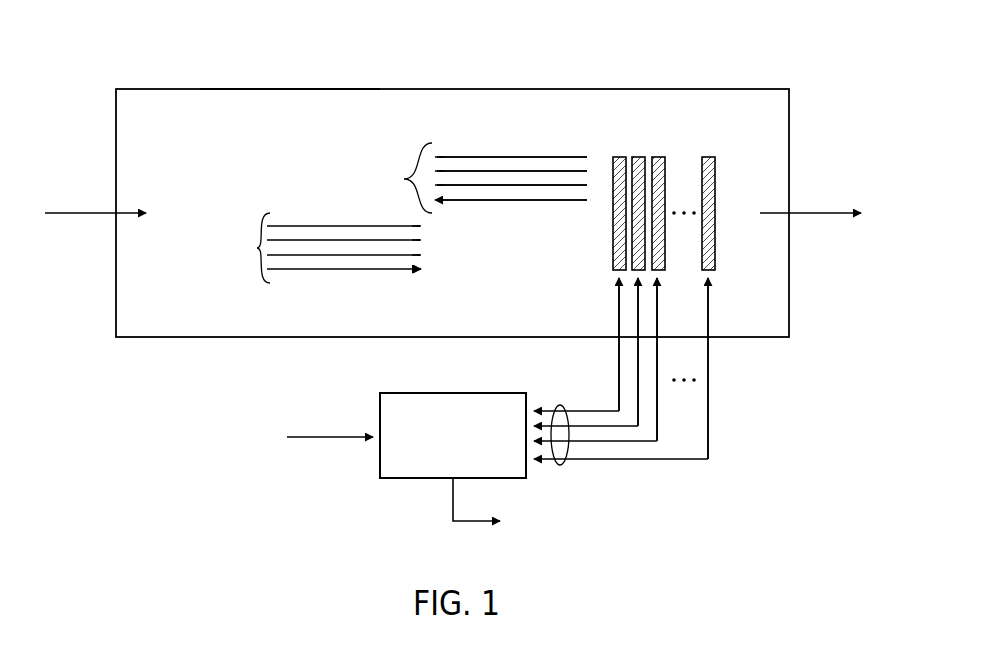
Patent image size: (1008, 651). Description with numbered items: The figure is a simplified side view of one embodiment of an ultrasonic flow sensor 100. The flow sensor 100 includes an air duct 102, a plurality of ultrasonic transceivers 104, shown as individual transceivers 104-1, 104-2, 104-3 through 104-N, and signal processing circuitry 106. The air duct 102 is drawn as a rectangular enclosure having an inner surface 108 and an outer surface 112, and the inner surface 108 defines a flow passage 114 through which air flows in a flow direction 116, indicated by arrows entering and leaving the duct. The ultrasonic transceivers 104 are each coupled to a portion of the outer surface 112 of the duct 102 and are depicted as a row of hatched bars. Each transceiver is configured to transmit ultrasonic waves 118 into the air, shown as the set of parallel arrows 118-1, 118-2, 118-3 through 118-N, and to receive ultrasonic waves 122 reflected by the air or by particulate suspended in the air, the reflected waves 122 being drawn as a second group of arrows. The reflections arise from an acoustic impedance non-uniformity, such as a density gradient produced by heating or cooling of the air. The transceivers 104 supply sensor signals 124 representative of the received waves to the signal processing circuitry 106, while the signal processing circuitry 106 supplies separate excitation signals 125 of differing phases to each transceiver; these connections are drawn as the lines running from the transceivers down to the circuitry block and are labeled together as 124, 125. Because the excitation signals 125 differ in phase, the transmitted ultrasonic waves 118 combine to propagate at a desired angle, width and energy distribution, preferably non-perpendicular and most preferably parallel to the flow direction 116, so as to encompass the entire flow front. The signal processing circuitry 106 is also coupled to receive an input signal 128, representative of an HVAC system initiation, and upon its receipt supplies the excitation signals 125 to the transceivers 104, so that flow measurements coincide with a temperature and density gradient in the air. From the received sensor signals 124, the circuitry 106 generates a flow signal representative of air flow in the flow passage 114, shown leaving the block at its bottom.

The ultrasonic flow sensor 100 is at (715, 49).
The air duct 102 is at (444, 86).
The ultrasonic transceivers 104 is at (713, 212).
The ultrasonic transceiver 104-1 is at (616, 157).
The ultrasonic transceiver 104-2 is at (637, 157).
The ultrasonic transceiver 104-3 is at (662, 163).
The ultrasonic transceiver 104-N is at (738, 186).
The signal processing circuitry 106 is at (453, 393).
The inner surface 108 is at (332, 89).
The outer surface 112 is at (243, 89).
The flow passage 114 is at (269, 153).
The flow direction 116 is at (79, 213).
The ultrasonic waves 118 is at (404, 179).
The ultrasonic wave 118-1 is at (480, 157).
The ultrasonic wave 118-2 is at (518, 171).
The ultrasonic wave 118-3 is at (498, 185).
The ultrasonic wave 118-N is at (560, 200).
The reflected ultrasonic waves 122 is at (255, 248).
The sensor signals 124 is at (565, 462).
The excitation signals 125 is at (663, 368).
The input signal 128 is at (330, 437).